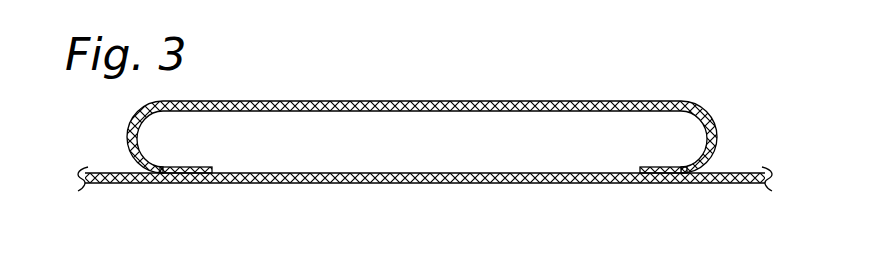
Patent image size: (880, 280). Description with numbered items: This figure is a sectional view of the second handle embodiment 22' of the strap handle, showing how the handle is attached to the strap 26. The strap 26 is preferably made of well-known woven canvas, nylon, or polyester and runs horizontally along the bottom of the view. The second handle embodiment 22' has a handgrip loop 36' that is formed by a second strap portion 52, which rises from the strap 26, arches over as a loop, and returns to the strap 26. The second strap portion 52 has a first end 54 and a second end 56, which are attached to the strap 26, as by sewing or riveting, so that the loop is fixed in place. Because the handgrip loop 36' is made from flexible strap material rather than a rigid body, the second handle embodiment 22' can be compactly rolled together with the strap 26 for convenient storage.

The second handle embodiment 22' is at (746, 48).
The handgrip loop 36' is at (422, 115).
The second strap portion 52 is at (342, 101).
The first end of second strap portion 54 is at (185, 167).
The second end of second strap portion 56 is at (660, 167).
The strap 26 is at (462, 173).